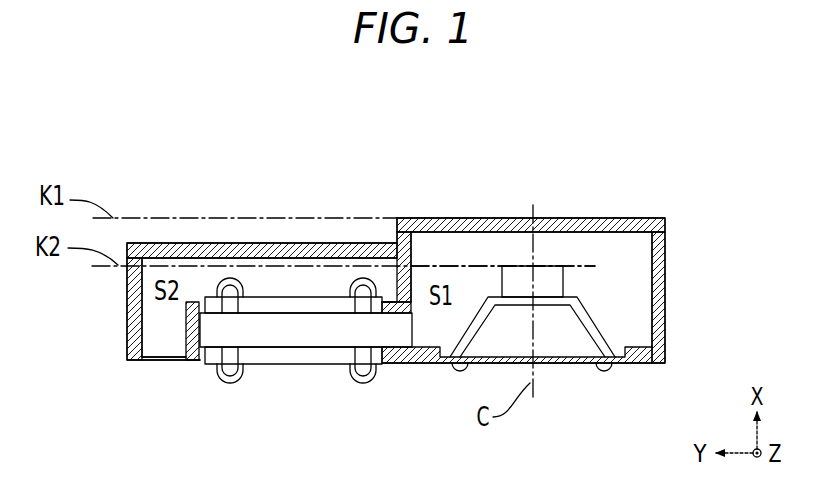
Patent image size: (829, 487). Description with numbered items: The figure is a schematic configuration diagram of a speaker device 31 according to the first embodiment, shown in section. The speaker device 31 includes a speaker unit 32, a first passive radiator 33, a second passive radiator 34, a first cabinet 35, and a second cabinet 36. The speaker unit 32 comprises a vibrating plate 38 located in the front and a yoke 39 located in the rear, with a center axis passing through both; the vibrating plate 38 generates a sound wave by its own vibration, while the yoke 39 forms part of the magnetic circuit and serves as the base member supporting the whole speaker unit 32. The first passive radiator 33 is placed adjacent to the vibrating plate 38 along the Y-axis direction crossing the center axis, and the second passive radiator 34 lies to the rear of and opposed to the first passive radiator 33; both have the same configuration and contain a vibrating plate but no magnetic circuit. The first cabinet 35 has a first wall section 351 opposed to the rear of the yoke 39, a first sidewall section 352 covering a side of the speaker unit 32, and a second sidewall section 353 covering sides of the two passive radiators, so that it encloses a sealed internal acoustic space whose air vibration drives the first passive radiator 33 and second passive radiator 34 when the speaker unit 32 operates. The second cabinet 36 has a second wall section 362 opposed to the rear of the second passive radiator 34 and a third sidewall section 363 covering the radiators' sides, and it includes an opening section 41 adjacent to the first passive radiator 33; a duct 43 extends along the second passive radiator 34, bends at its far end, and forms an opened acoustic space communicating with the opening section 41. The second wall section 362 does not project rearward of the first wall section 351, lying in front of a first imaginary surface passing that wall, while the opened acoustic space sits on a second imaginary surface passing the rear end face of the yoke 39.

The speaker device 31 is at (395, 141).
The speaker unit 32 is at (578, 256).
The first passive radiator 33 is at (290, 358).
The second passive radiator 34 is at (307, 303).
The first cabinet 35 is at (429, 216).
The first wall section 351 is at (472, 225).
The first sidewall section 352 is at (665, 272).
The second sidewall section 353 is at (187, 338).
The second cabinet 36 is at (178, 243).
The second wall section 362 is at (249, 252).
The third sidewall section 363 is at (132, 293).
The vibrating plate 38 is at (565, 355).
The yoke 39 is at (551, 275).
The opening section 41 is at (165, 360).
The duct 43 is at (358, 266).